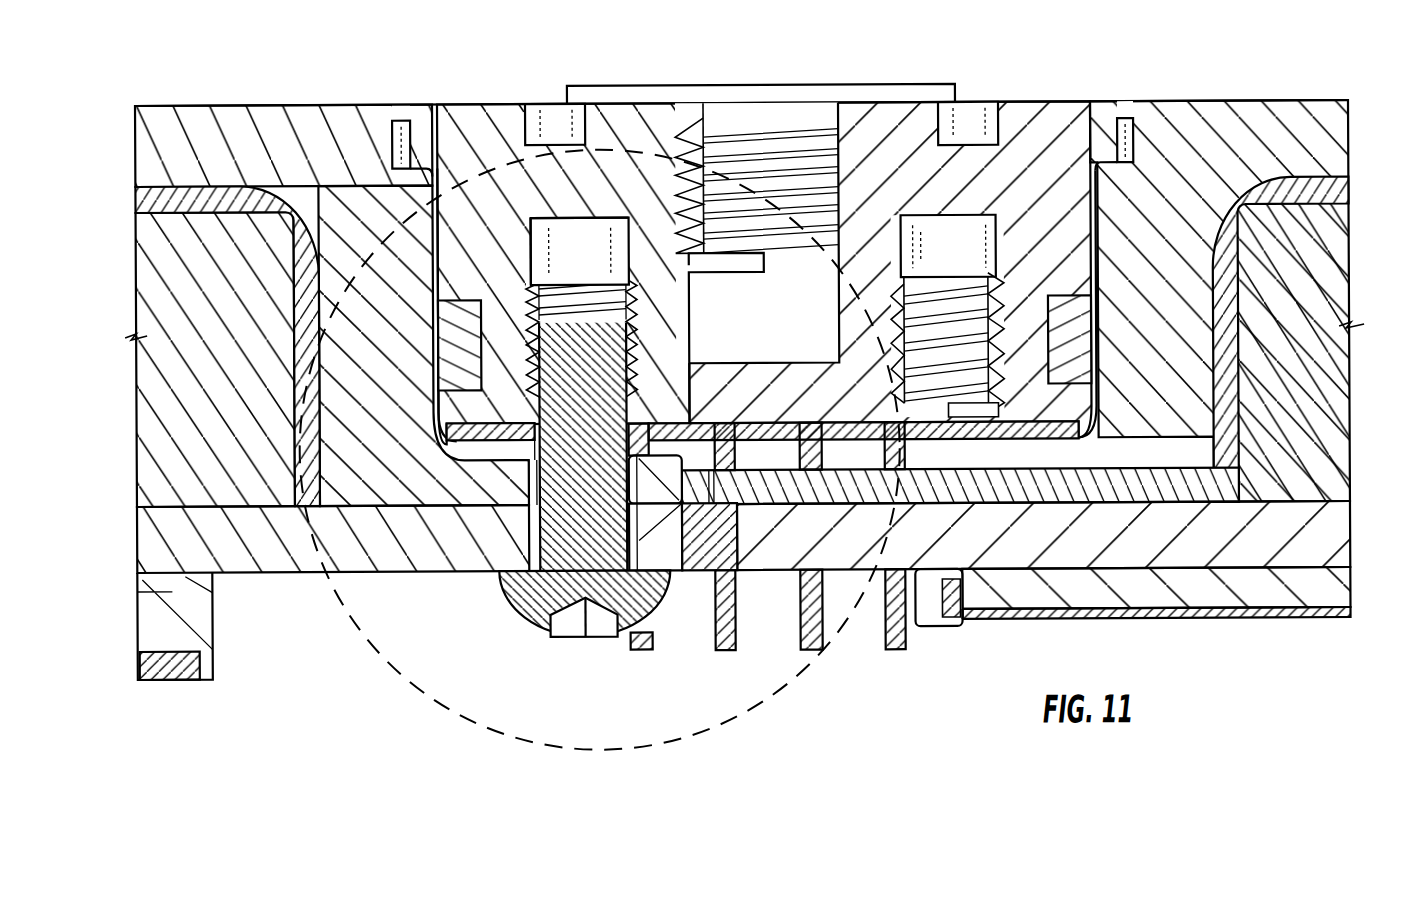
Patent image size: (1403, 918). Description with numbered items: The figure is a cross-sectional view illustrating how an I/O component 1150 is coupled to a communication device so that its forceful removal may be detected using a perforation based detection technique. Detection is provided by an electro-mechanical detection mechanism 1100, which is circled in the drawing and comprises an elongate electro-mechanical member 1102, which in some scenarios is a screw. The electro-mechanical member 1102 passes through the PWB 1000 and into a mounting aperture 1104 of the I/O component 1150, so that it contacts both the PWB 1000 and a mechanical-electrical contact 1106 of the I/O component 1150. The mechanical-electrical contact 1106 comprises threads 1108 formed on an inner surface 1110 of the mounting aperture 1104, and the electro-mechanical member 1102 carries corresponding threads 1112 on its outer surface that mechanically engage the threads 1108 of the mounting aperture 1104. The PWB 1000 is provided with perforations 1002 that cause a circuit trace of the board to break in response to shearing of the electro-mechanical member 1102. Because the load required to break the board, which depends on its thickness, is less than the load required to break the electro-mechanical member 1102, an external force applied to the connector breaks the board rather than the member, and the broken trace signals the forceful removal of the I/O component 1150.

The PWB 1000 is at (236, 554).
The perforations 1002 is at (740, 568).
The electro-mechanical detection mechanism 1100 is at (432, 713).
The electro-mechanical member 1102 is at (528, 602).
The mounting aperture 1104 is at (555, 209).
The mechanical-electrical contact 1106 is at (604, 264).
The threads 1108 is at (634, 301).
The inner surface 1110 is at (528, 264).
The threads 1112 is at (640, 351).
The I/O component 1150 is at (745, 367).